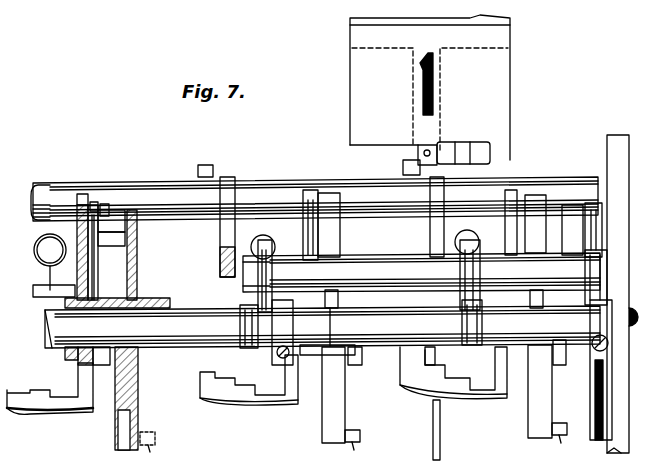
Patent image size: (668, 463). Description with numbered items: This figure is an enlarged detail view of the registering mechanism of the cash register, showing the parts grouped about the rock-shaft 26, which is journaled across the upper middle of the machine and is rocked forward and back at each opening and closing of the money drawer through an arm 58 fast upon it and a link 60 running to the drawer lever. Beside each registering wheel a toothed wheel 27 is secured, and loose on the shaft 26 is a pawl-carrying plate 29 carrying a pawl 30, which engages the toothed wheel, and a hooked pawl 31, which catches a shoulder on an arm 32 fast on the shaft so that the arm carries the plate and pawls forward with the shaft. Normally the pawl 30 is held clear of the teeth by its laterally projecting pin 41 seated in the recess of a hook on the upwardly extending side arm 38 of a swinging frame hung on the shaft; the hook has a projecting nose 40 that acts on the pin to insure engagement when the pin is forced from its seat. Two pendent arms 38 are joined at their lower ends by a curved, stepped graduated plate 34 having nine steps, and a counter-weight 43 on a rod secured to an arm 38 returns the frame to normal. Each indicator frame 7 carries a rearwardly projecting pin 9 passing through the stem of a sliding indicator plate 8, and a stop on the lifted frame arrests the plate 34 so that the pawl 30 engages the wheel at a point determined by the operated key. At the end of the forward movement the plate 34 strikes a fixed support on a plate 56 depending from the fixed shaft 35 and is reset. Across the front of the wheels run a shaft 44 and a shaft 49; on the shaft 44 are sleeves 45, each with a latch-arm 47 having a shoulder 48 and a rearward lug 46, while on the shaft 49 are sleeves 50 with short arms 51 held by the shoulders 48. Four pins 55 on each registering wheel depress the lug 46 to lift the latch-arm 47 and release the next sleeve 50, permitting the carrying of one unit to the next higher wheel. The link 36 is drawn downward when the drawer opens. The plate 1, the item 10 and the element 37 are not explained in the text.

The frame plate 1 is at (628, 440).
The indicator frame 7 is at (417, 153).
The indicator plate 8 is at (502, 100).
The pin 9 is at (432, 150).
The counter wheel 10 is at (273, 275).
The rock-shaft 26 is at (187, 328).
The toothed wheel 27 is at (115, 432).
The pawl-carrying plate 29 is at (88, 268).
The pawl 30 is at (111, 228).
The pawl 31 is at (310, 192).
The arm 32 is at (160, 300).
The graduated plate 34 is at (18, 415).
The fixed shaft 35 is at (38, 196).
The link 36 is at (72, 183).
The stop 37 is at (425, 358).
The side arm 38 is at (77, 240).
The projecting nose 40 is at (86, 198).
The pin 41 is at (97, 203).
The counter-weight 43 is at (36, 245).
The shaft 44 is at (607, 270).
The sleeve 45 is at (421, 272).
The lug 46 is at (355, 365).
The latch-arm 47 is at (4, 300).
The shoulder 48 is at (15, 277).
The shaft 49 is at (638, 317).
The sleeve 50 is at (465, 326).
The short arm 51 is at (240, 318).
The pin 55 is at (357, 442).
The plate 56 is at (220, 230).
The arm 58 is at (572, 230).
The link 60 is at (594, 222).